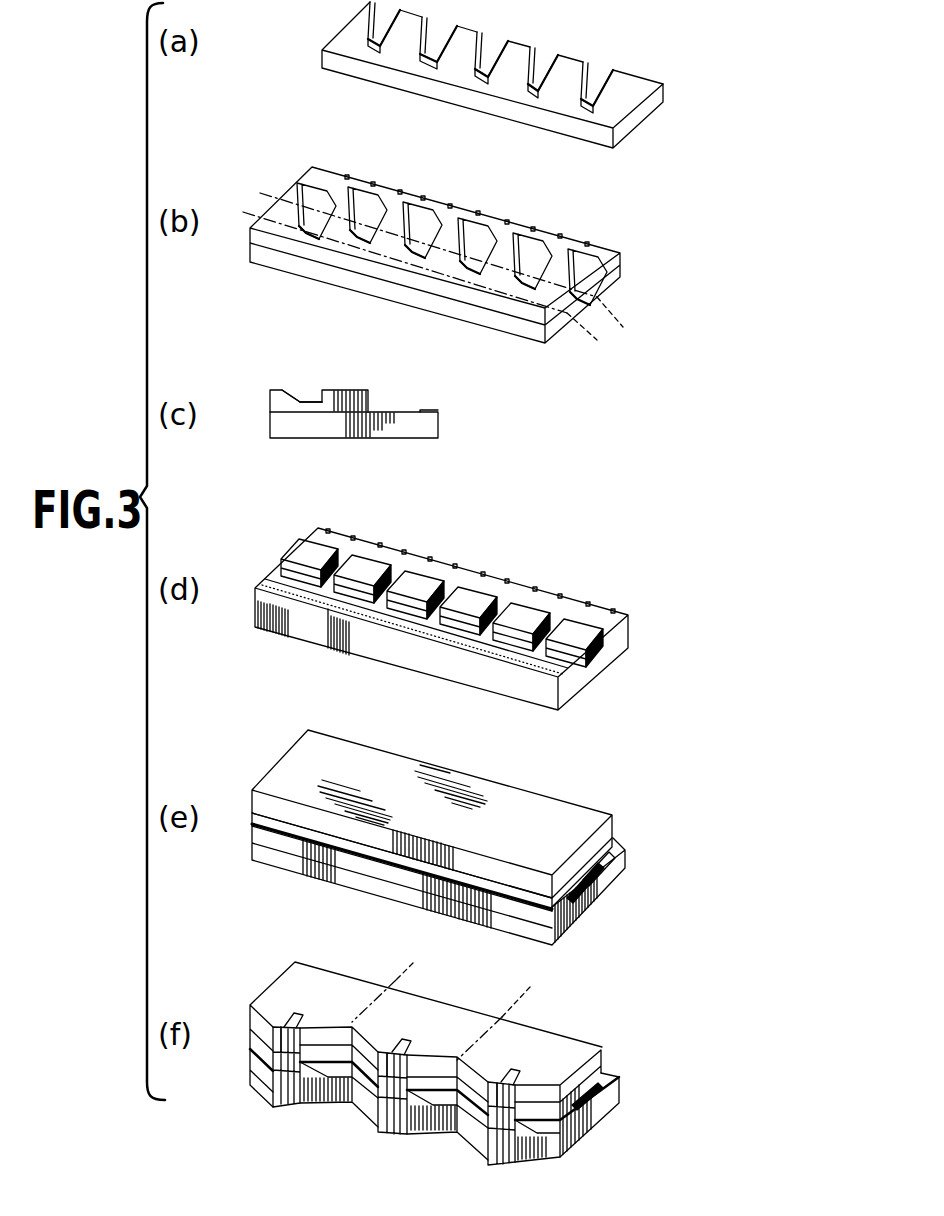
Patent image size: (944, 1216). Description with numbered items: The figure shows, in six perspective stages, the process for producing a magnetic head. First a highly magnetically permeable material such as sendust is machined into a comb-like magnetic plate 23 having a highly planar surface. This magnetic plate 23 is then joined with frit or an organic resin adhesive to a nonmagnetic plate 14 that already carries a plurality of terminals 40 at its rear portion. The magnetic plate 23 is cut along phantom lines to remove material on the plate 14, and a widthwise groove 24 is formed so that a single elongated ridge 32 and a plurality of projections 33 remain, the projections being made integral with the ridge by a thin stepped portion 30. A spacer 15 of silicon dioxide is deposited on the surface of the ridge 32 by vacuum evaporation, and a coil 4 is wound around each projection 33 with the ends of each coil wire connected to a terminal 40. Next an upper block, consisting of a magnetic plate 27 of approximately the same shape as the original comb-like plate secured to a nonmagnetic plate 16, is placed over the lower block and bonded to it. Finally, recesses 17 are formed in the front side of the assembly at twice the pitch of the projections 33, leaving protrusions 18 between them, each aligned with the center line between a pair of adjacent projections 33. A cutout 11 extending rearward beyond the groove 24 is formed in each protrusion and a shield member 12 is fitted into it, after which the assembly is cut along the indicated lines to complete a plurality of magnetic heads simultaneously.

The coil 4 is at (587, 882).
The cutout 11 is at (292, 1020).
The shield member 12 is at (302, 1014).
The nonmagnetic plate 14 is at (577, 318).
The spacer 15 is at (282, 391).
The nonmagnetic plate 16 is at (275, 778).
The recess 17 is at (250, 1065).
The protrusion 18 is at (272, 1092).
The magnetic plate 23 is at (368, 15).
The groove 24 is at (310, 394).
The magnetic plate 27 is at (253, 815).
The thin stepped portion 30 is at (318, 410).
The ridge 32 is at (272, 402).
The projection 33 is at (372, 397).
The terminal 40 is at (355, 168).